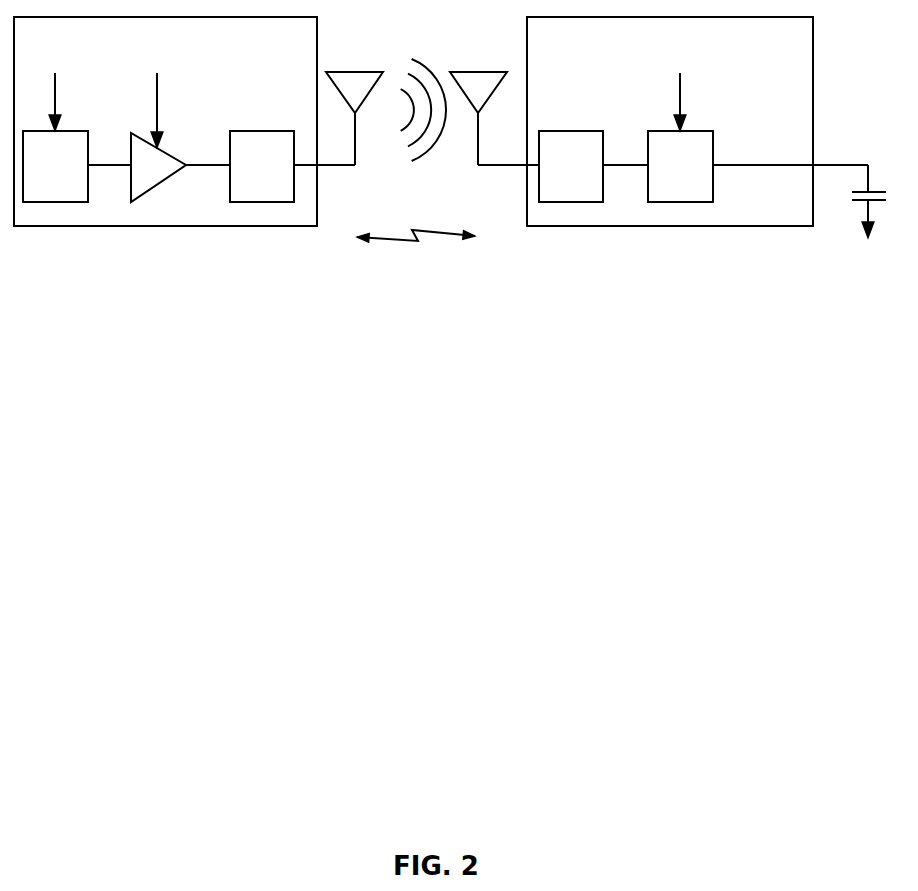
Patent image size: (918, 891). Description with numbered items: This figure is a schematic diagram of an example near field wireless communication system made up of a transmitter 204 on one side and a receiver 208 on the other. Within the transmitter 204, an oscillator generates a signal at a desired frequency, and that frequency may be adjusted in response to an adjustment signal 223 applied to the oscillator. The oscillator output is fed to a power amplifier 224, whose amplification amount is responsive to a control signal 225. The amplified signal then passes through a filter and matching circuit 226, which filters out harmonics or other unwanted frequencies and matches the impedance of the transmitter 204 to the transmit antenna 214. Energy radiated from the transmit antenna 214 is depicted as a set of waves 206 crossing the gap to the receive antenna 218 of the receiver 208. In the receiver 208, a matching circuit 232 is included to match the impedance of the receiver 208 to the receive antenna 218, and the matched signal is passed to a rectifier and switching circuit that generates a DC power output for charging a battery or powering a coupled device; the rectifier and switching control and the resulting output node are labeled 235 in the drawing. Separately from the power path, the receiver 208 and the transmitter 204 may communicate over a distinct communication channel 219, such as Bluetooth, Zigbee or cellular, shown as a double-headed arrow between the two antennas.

The transmitter 204 is at (182, 46).
The transmit antenna 214 is at (71, 188).
The adjustment signal 223 is at (55, 83).
The power amplifier 224 is at (166, 173).
The control signal 225 is at (157, 83).
The filter and matching circuit 226 is at (278, 173).
The wireless power transmission field 206 is at (424, 172).
The receive antenna 218 is at (491, 72).
The communication channel 219 is at (420, 260).
The receiver 208 is at (686, 46).
The matching circuit 232 is at (587, 173).
The rectifier switching control / output 235 is at (680, 92).